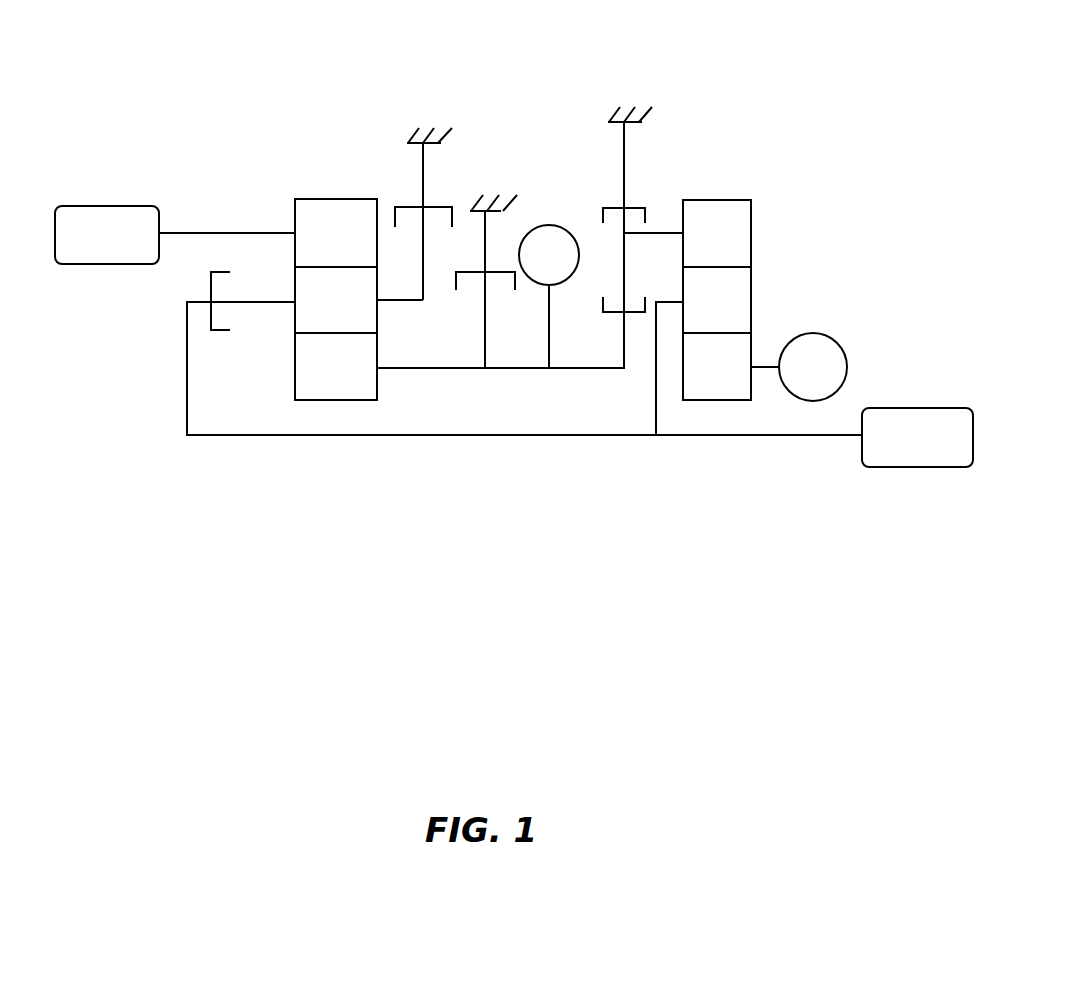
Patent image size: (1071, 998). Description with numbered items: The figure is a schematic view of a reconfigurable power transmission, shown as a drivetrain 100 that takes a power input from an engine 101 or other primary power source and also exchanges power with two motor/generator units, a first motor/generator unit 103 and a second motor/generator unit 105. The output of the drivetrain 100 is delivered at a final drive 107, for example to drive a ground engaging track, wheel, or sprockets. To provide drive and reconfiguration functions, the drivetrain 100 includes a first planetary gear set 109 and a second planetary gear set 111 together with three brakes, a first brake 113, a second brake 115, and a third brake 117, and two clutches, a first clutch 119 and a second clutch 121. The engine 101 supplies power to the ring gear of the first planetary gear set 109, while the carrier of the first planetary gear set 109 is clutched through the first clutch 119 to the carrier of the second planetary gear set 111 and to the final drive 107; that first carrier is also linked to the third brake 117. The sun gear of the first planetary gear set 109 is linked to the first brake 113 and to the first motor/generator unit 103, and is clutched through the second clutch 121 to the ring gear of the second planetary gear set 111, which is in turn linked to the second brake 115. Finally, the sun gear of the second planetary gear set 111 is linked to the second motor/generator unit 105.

The drivetrain 100 is at (475, 640).
The engine 101 is at (155, 203).
The first motor/generator unit 103 is at (552, 225).
The second motor/generator unit 105 is at (813, 333).
The final drive 107 is at (892, 408).
The first planetary gear set 109 is at (323, 400).
The second planetary gear set 111 is at (705, 400).
The first brake 113 is at (467, 265).
The second brake 115 is at (634, 207).
The third brake 117 is at (407, 207).
The first clutch 119 is at (210, 280).
The second clutch 121 is at (615, 313).